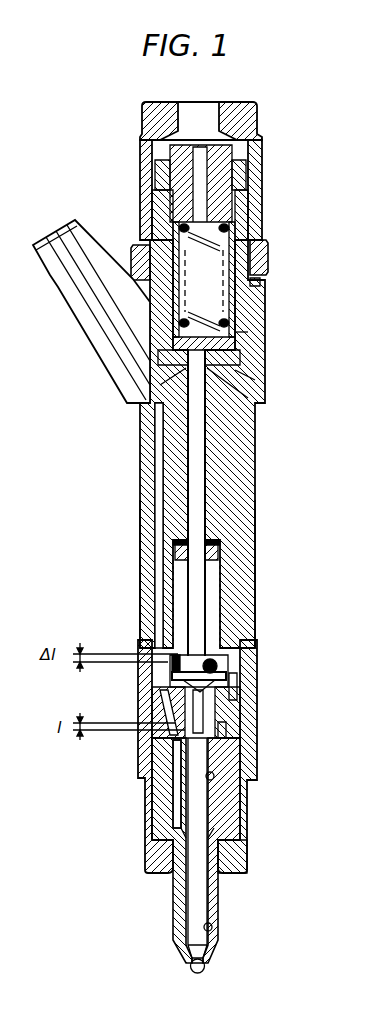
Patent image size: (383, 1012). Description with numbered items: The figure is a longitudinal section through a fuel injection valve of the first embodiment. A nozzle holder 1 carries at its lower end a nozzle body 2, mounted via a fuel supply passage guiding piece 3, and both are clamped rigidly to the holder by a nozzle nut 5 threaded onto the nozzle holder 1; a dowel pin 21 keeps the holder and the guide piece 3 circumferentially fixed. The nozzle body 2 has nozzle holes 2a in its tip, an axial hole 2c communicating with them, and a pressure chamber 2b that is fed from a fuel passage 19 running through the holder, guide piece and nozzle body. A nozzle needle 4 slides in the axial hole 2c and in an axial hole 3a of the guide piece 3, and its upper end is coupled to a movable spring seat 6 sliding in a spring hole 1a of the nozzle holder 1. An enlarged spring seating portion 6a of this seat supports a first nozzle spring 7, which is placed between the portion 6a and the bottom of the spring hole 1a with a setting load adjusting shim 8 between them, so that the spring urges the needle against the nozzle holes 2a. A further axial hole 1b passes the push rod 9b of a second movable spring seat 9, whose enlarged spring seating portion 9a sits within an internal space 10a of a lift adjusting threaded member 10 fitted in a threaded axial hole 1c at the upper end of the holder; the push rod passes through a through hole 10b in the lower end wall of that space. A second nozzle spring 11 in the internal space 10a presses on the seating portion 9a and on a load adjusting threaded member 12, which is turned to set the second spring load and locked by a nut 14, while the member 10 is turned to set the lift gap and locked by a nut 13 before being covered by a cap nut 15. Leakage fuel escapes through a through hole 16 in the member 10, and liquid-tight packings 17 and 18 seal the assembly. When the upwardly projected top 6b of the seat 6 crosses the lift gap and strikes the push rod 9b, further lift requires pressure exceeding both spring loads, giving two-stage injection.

The nozzle holder 1 is at (243, 580).
The spring hole 1a is at (222, 618).
The axial hole 1b is at (208, 480).
The axial hole 1c is at (245, 332).
The nozzle body 2 is at (228, 802).
The nozzle holes 2a is at (205, 972).
The pressure chamber 2b is at (224, 827).
The axial hole 2c is at (215, 775).
The fuel supply passage guiding piece 3 is at (240, 709).
The axial hole 3a is at (200, 737).
The nozzle needle 4 is at (198, 900).
The nozzle nut 5 is at (243, 860).
The movable spring seat 6 is at (240, 698).
The spring seating portion 6a is at (245, 662).
The upwardly projected top 6b is at (188, 671).
The first nozzle spring 7 is at (212, 562).
The setting load adjusting shim 8 is at (210, 538).
The movable spring seat 9 is at (236, 432).
The spring seating portion 9a is at (240, 378).
The push rod 9b is at (240, 458).
The lift adjusting threaded member 10 is at (240, 309).
The internal space 10a is at (222, 296).
The through hole 10b is at (232, 401).
The second nozzle spring 11 is at (243, 368).
The load adjusting threaded member 12 is at (244, 205).
The nut 13 is at (264, 260).
The nut 14 is at (246, 169).
The cap nut 15 is at (256, 112).
The through hole 16 is at (129, 256).
The liquid-tight packing 17 is at (262, 281).
The liquid-tight packing 18 is at (253, 245).
The fuel passage 19 is at (118, 333).
The dowel pin 21 is at (237, 681).